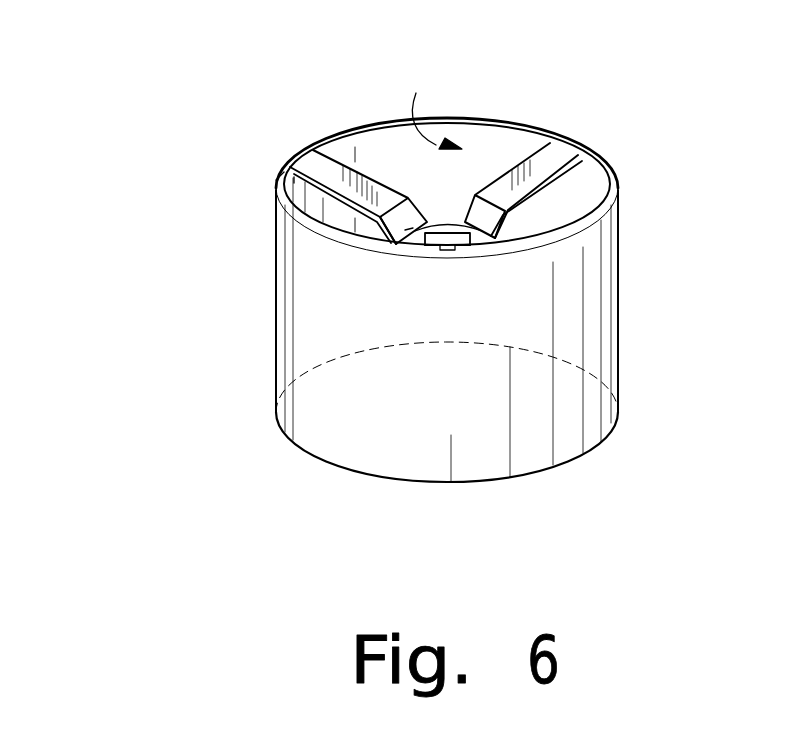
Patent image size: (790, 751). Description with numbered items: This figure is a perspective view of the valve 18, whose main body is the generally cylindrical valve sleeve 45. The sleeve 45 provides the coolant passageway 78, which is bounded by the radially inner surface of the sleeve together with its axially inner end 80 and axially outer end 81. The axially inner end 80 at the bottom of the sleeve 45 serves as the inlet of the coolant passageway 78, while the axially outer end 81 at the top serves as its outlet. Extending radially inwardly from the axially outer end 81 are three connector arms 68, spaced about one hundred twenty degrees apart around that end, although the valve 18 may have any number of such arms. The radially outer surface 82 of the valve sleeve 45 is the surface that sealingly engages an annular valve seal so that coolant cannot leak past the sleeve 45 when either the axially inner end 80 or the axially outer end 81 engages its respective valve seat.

The valve 18 is at (190, 99).
The valve sleeve 45 is at (621, 338).
The connector arms 68 is at (328, 165).
The coolant passageway 78 is at (433, 106).
The axially inner end 80 is at (565, 468).
The axially outer end 81 is at (608, 180).
The radially outer surface 82 is at (277, 312).